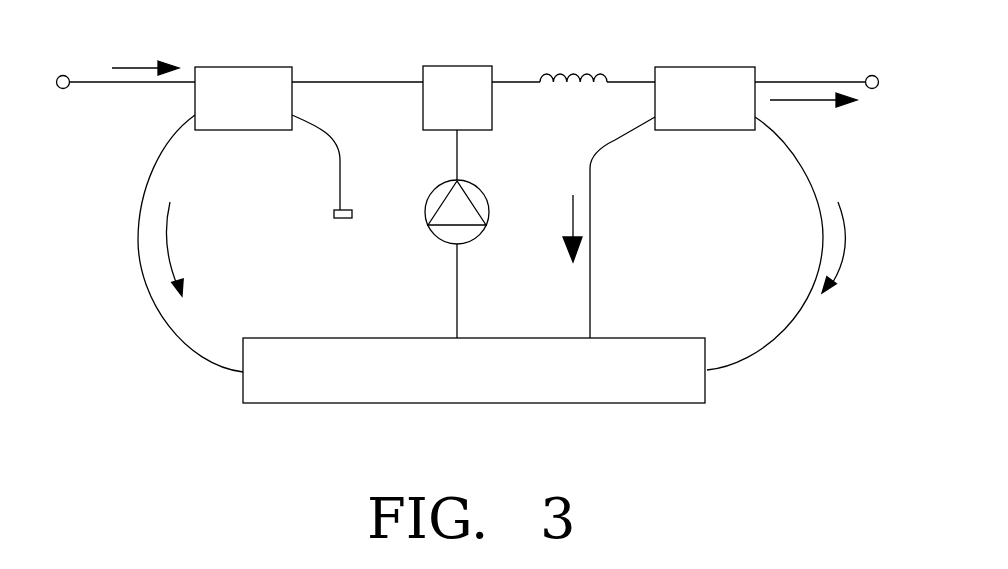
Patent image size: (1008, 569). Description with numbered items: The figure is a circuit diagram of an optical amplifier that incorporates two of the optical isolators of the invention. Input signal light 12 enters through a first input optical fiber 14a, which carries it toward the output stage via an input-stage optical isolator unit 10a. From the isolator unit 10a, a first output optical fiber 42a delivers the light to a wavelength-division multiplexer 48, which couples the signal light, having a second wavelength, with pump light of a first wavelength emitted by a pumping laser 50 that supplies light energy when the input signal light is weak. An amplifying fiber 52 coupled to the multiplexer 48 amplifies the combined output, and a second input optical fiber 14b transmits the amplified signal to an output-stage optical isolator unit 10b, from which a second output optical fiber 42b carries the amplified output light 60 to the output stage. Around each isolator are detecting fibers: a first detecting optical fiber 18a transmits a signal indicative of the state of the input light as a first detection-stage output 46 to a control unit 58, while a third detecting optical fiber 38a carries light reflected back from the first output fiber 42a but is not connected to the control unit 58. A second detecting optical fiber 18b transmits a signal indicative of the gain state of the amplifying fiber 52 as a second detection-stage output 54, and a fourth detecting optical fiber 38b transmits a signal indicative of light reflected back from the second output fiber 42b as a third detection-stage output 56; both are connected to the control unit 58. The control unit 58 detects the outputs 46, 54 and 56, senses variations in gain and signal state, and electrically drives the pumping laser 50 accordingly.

The input-stage optical isolator unit 10a is at (225, 111).
The output-stage optical isolator unit 10b is at (684, 111).
The input signal light 12 is at (128, 62).
The first input optical fiber 14a is at (113, 85).
The second input optical fiber 14b is at (622, 82).
The first detecting optical fiber 18a is at (170, 143).
The second detecting optical fiber 18b is at (613, 135).
The third detecting optical fiber 38a is at (330, 142).
The fourth detecting optical fiber 38b is at (788, 150).
The first output optical fiber 42a is at (357, 80).
The second output optical fiber 42b is at (804, 80).
The first detection-stage output 46 is at (165, 245).
The wavelength-division multiplexer 48 is at (444, 111).
The pumping laser 50 is at (433, 236).
The amplifying fiber 52 is at (549, 60).
The second detection-stage output 54 is at (572, 218).
The third detection-stage output 56 is at (847, 243).
The control unit 58 is at (445, 386).
The amplified output light 60 is at (808, 100).